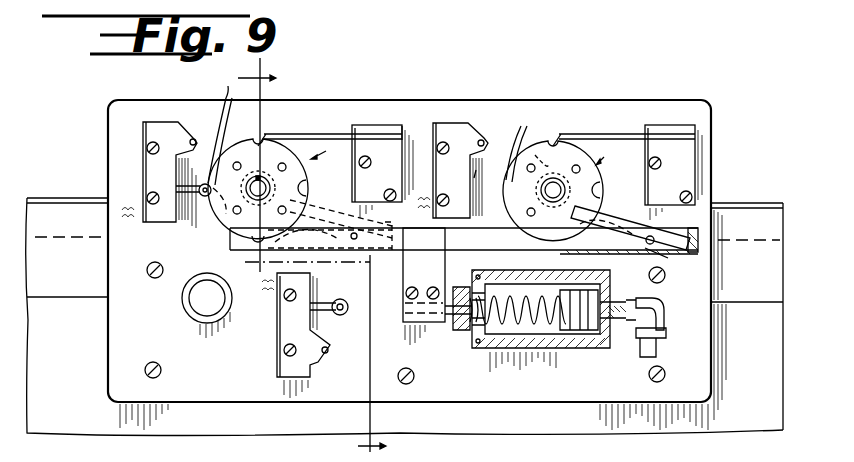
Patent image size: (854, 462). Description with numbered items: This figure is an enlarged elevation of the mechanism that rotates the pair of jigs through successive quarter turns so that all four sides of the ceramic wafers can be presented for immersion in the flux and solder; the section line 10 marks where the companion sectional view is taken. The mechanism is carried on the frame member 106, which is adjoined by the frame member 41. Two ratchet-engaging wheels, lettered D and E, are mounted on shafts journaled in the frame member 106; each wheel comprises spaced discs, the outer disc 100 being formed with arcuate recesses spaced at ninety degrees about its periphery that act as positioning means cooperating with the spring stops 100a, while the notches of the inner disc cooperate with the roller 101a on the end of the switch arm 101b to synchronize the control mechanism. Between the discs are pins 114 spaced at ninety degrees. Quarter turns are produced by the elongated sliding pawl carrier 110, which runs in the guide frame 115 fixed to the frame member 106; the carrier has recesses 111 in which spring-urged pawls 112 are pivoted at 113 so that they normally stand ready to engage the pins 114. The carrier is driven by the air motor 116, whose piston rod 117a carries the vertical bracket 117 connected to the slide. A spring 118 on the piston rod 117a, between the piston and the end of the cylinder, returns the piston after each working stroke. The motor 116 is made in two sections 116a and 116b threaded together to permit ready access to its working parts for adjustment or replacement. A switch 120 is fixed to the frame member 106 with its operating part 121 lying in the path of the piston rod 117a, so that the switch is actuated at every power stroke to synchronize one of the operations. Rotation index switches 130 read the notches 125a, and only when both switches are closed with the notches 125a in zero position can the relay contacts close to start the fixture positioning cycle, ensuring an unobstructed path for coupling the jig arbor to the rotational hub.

The section line 10— 10 is at (323, 256).
The frame member 41 is at (36, 294).
The frame member 106 is at (110, 341).
The disc 100 is at (245, 226).
The spring stops 100a is at (278, 133).
The roller 101a is at (221, 119).
The switch arm 101b is at (228, 94).
The sliding pawl carrier 110 is at (528, 256).
The recesses 111 is at (690, 232).
The pawls 112 is at (605, 222).
The pawl pivot 113 is at (658, 222).
The pins 114 is at (245, 211).
The guide frame 115 is at (480, 258).
The air motor 116 is at (582, 353).
The motor section 116a is at (492, 353).
The motor section 116b is at (612, 286).
The vertical bracket 117 is at (434, 276).
The piston rod 117a is at (460, 340).
The spring 118 is at (566, 277).
The switch 120 is at (278, 359).
The operating part 121 is at (363, 291).
The notches 125a is at (226, 216).
The rotation index switches 130 is at (150, 156).